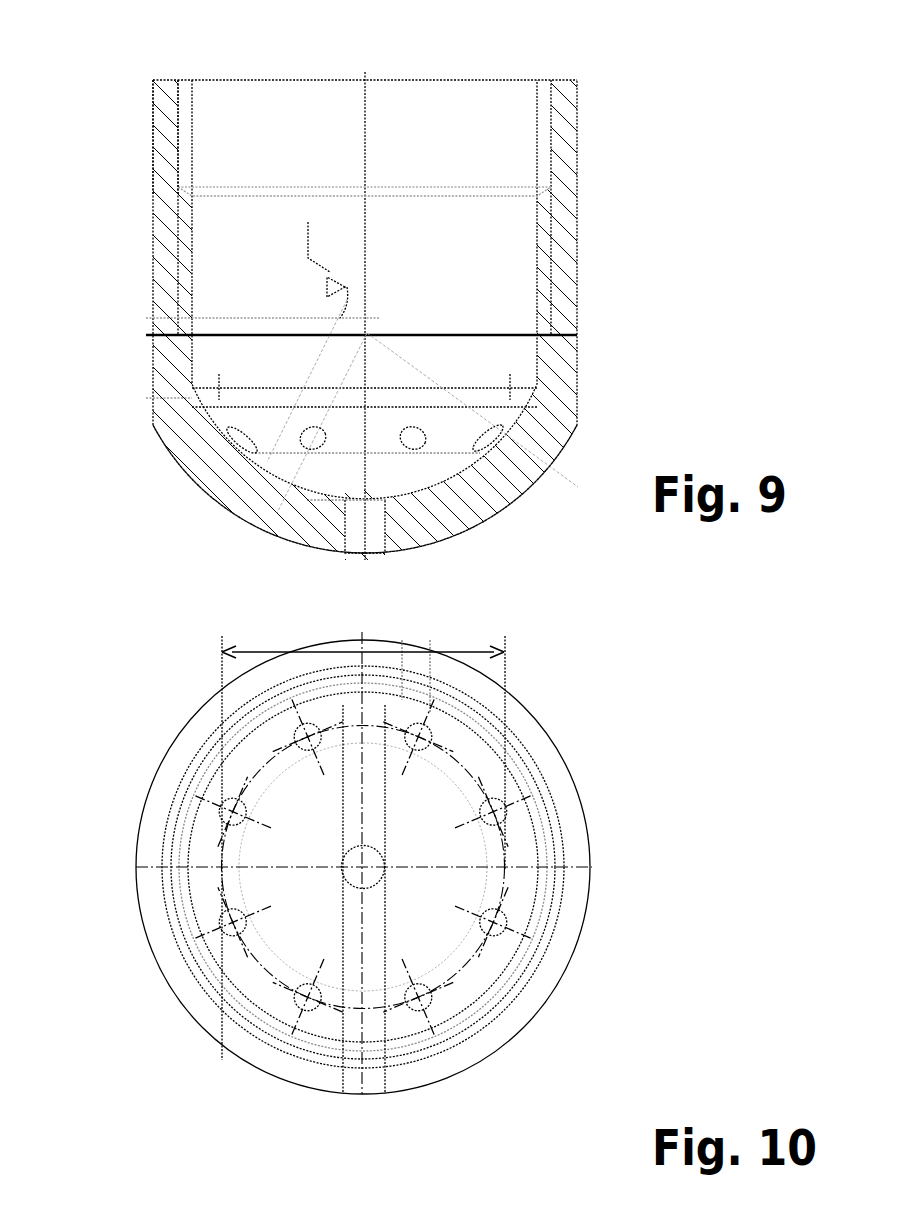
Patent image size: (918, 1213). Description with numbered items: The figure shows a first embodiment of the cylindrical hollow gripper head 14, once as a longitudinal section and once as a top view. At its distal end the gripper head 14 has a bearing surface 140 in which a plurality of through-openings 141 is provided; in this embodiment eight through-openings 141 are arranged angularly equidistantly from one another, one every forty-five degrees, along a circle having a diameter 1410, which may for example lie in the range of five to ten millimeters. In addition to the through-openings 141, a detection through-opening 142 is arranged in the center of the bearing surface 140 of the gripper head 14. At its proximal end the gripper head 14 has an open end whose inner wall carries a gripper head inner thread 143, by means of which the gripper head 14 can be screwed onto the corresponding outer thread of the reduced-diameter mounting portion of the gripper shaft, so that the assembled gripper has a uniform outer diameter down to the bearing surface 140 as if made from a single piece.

In FIG. 9, the gripper head 14 is at (632, 107).
In FIG. 10, the gripper head 14 is at (575, 688).
In FIG. 9, the bearing surface 140 is at (462, 531).
In FIG. 9, the through-openings 141 is at (240, 440).
In FIG. 10, the through-openings 141 is at (225, 920).
In FIG. 9, the detection through-opening 142 is at (375, 547).
In FIG. 10, the detection through-opening 142 is at (368, 878).
In FIG. 9, the gripper head inner thread 143 is at (178, 143).
In FIG. 10, the diameter 1410 is at (320, 648).